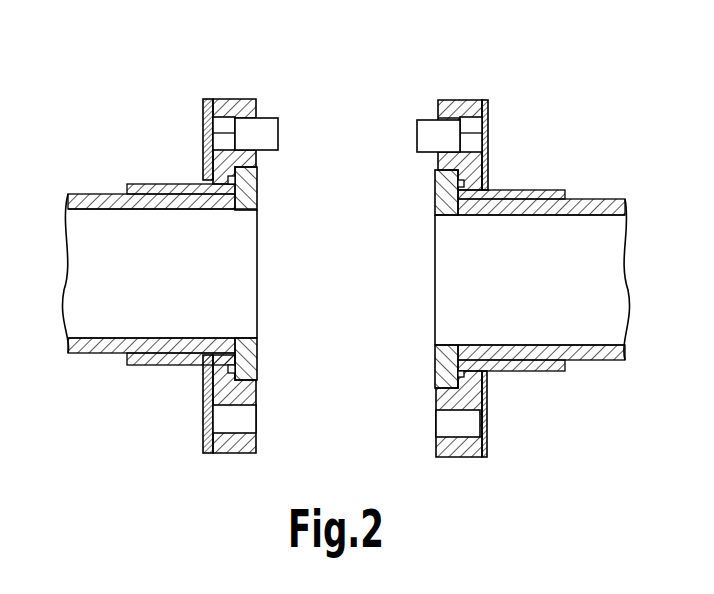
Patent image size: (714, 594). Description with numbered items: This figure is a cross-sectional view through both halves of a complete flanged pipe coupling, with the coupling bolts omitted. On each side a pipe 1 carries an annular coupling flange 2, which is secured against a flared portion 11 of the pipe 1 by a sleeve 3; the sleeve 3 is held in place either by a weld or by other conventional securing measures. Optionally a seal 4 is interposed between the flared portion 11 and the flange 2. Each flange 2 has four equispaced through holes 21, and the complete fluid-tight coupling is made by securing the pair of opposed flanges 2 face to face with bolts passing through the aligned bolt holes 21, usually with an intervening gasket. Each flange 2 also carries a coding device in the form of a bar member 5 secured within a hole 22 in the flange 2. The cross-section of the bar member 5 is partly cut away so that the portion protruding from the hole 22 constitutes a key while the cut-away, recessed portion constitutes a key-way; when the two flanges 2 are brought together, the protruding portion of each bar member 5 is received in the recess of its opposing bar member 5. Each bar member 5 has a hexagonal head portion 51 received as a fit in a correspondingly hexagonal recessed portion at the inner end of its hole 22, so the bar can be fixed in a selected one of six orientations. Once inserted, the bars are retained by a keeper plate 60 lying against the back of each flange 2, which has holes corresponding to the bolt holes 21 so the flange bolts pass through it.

The pipe 1 is at (100, 194).
The coupling flange 2 is at (215, 453).
The sleeve 3 is at (168, 188).
The seal 4 is at (208, 370).
The bar member 5 is at (256, 128).
The flared portion 11 is at (260, 362).
The through holes 21 is at (233, 420).
The hole 22 is at (438, 102).
The hexagonal head portion 51 is at (225, 122).
The keeper plate 60 is at (203, 105).